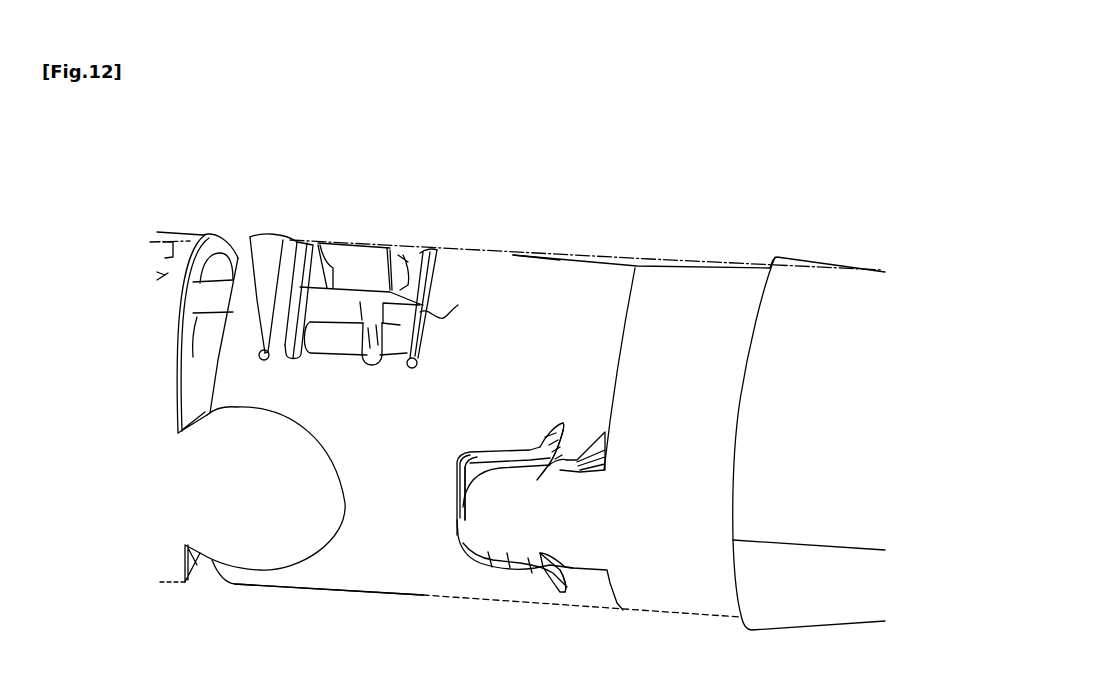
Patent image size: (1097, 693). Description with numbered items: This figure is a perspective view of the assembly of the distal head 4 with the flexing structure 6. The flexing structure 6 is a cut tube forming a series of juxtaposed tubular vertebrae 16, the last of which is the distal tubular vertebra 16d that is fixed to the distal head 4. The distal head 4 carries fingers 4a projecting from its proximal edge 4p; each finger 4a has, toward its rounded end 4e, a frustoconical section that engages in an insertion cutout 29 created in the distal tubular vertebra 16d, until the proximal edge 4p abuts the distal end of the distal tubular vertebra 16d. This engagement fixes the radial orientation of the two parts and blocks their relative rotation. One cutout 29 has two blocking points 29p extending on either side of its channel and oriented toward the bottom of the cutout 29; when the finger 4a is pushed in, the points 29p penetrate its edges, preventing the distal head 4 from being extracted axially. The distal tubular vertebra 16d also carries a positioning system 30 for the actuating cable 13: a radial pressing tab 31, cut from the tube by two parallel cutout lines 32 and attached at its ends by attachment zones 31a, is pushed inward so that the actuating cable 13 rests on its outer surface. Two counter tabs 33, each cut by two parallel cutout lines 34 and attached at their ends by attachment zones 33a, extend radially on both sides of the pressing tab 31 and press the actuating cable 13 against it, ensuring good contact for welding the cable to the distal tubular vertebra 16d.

The distal head 4 is at (813, 275).
The finger 4a is at (513, 523).
The rounded end 4e is at (457, 520).
The proximal edge 4p is at (625, 293).
The flexing structure 6 is at (203, 617).
The actuating cable 13 is at (360, 302).
The tubular vertebra 16 is at (177, 327).
The distal tubular vertebra 16d is at (557, 280).
The insertion cutout 29 is at (479, 448).
The blocking point 29p is at (563, 465).
The positioning system 30 is at (397, 220).
The pressing tab 31 is at (360, 258).
The attachment zone 31a is at (330, 357).
The cutout line 32 is at (317, 243).
The counter tab 33 is at (290, 278).
The attachment zone 33a is at (261, 359).
The cutout line 34 is at (163, 240).